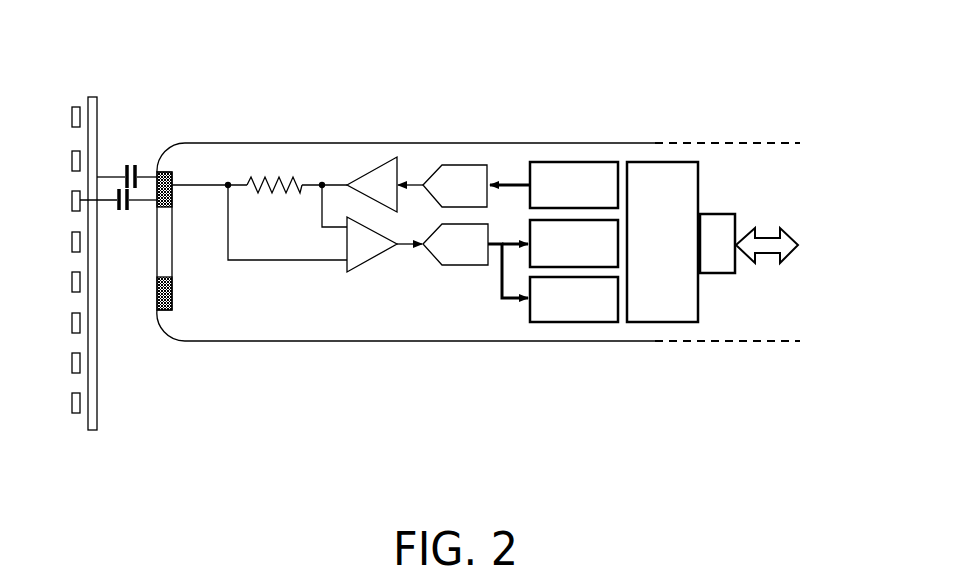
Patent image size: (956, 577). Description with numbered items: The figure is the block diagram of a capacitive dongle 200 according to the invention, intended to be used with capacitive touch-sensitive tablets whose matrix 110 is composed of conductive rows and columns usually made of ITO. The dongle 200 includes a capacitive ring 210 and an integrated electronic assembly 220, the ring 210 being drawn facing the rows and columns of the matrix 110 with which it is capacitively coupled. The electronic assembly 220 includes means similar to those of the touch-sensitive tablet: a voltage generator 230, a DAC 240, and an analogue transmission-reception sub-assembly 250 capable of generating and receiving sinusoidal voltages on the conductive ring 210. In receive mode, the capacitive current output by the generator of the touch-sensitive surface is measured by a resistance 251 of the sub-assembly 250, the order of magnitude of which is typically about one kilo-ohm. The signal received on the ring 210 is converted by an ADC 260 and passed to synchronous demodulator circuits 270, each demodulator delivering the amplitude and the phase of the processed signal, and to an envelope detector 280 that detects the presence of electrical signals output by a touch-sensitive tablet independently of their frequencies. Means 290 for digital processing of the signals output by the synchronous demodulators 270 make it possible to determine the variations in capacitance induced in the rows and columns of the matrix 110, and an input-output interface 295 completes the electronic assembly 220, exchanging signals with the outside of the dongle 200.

The matrix 110 is at (113, 225).
The capacitive dongle 200 is at (478, 197).
The capacitive ring 210 is at (173, 294).
The integrated electronic assembly 220 is at (758, 304).
The voltage generator 230 is at (573, 175).
The DAC 240 is at (453, 170).
The analogue transmission-reception sub-assembly 250 is at (297, 210).
The resistance 251 is at (272, 172).
The ADC 260 is at (452, 270).
The synchronous demodulator circuits 270 is at (592, 242).
The envelope detector 280 is at (574, 325).
The means for digital processing 290 is at (672, 175).
The input-output interface 295 is at (722, 212).